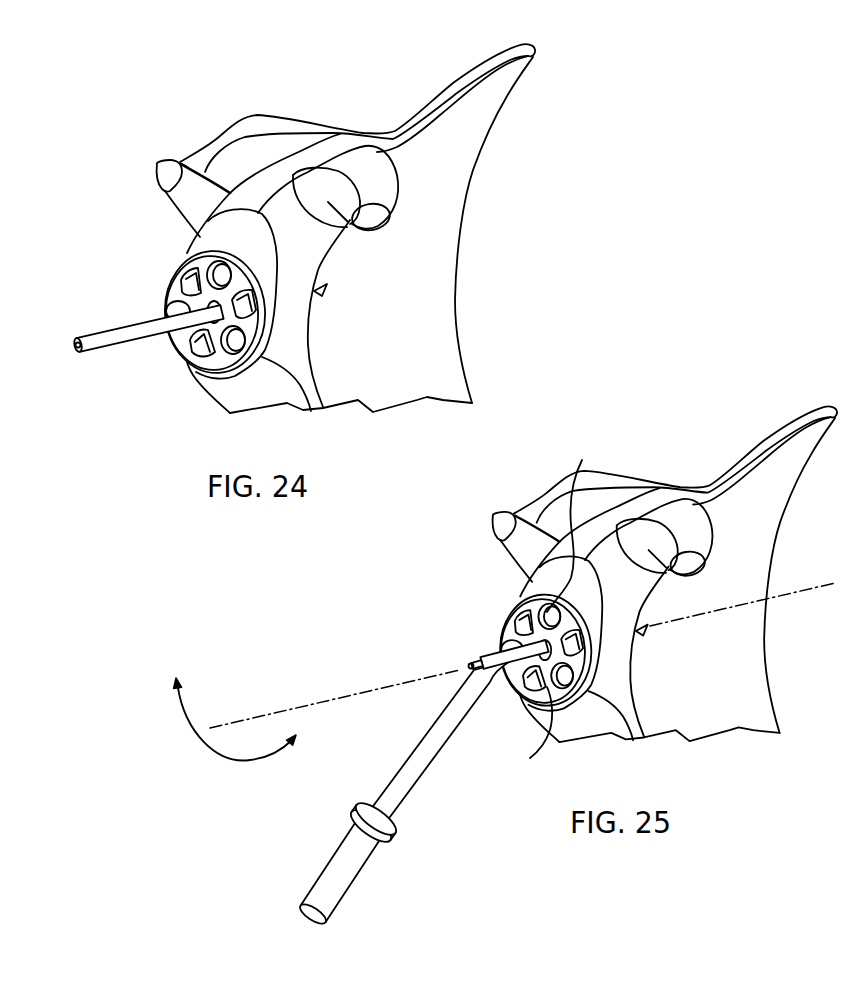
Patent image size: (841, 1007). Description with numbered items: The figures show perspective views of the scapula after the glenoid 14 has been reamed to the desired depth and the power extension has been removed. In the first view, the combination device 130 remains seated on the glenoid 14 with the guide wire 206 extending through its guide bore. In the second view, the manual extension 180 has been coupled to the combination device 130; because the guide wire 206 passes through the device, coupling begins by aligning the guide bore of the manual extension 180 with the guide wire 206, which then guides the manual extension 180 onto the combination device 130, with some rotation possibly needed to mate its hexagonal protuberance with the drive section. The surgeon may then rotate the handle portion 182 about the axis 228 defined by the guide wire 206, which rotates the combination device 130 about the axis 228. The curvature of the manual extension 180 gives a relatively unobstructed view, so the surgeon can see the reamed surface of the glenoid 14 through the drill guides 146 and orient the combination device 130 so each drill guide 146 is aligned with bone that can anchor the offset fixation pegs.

In FIG. 24, the glenoid 14 is at (203, 240).
In FIG. 25, the glenoid 14 is at (534, 579).
In FIG. 24, the combination device 130 is at (163, 295).
In FIG. 25, the combination device 130 is at (497, 630).
In FIG. 25, the drill guides 146 is at (551, 612).
In FIG. 25, the manual extension 180 is at (394, 779).
In FIG. 25, the handle portion 182 is at (332, 861).
In FIG. 24, the guide wire 206 is at (122, 344).
In FIG. 25, the guide wire 206 is at (462, 665).
In FIG. 25, the axis 228 is at (331, 700).